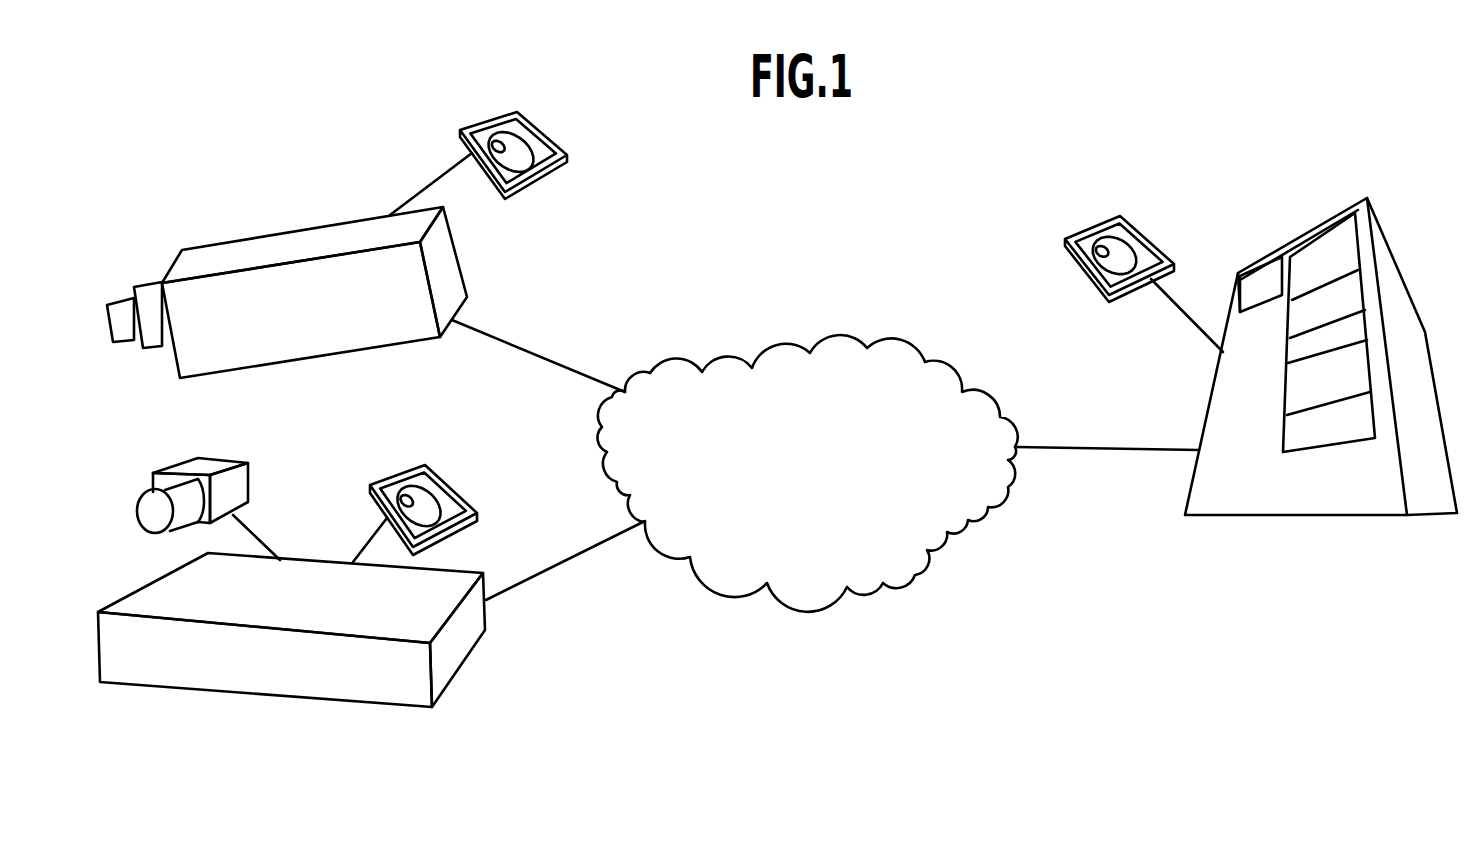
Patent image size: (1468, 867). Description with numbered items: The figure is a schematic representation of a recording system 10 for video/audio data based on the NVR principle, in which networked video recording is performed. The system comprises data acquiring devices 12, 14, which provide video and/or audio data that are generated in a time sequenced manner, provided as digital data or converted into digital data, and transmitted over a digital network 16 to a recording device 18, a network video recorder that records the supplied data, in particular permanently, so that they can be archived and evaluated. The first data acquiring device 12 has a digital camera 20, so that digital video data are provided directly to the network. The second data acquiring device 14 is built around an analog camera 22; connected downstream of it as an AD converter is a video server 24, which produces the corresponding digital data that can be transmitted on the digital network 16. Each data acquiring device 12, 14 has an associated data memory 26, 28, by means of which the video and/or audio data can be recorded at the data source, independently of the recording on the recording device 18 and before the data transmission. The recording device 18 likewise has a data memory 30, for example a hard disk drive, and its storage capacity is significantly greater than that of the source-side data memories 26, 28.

The recording system 10 is at (1058, 632).
The data acquiring device 12 is at (329, 174).
The data acquiring device 14 is at (425, 738).
The digital network 16 is at (780, 370).
The recording device 18 is at (1261, 545).
The digital camera 20 is at (233, 262).
The analog camera 22 is at (213, 466).
The video server 24 is at (293, 678).
The data memory 26 is at (538, 150).
The data memory 28 is at (445, 507).
The data memory 30 is at (1139, 260).